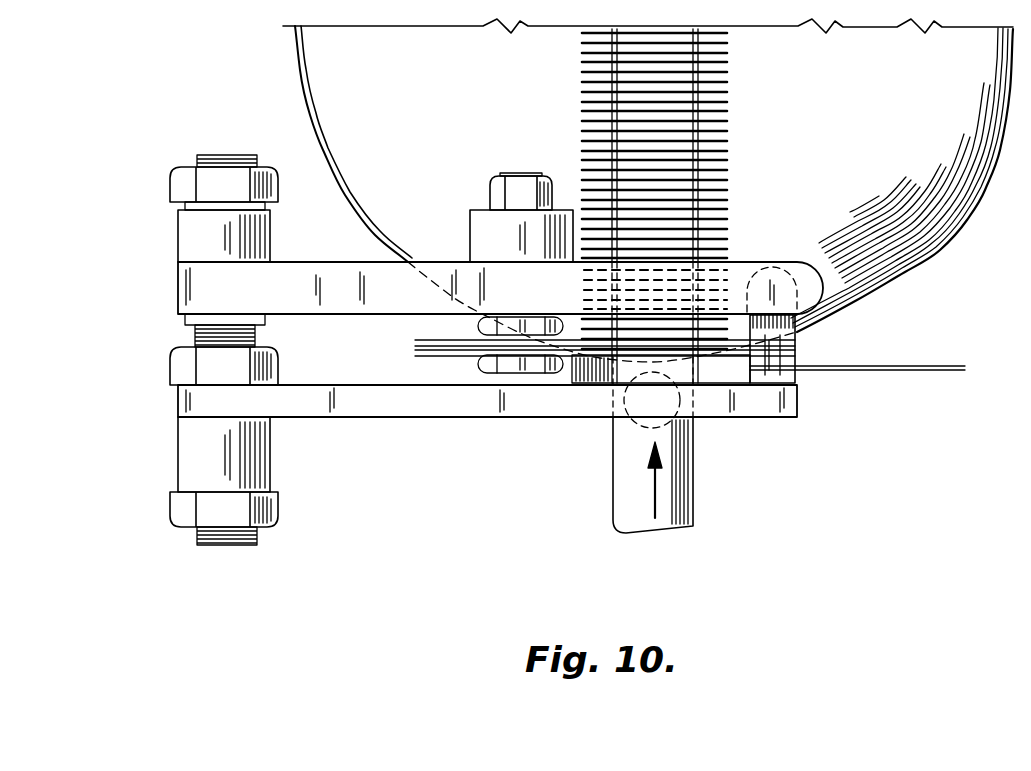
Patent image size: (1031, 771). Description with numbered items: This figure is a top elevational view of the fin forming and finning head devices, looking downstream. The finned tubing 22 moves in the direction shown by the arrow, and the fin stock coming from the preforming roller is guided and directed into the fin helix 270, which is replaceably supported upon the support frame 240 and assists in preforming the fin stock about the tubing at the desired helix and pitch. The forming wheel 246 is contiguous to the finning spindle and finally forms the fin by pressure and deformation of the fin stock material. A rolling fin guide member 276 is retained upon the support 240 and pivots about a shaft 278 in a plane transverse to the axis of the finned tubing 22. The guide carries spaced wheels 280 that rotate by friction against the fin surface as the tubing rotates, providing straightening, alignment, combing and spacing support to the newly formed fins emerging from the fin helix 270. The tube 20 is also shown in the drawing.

The tube 20 is at (613, 507).
The finned tubing 22 is at (728, 246).
The support 240 is at (445, 412).
The forming wheel 246 is at (908, 264).
The fin helix 270 is at (593, 362).
The rolling fin guide member 276 is at (362, 314).
The shaft 278 is at (180, 320).
The spaced wheels 280 is at (418, 346).